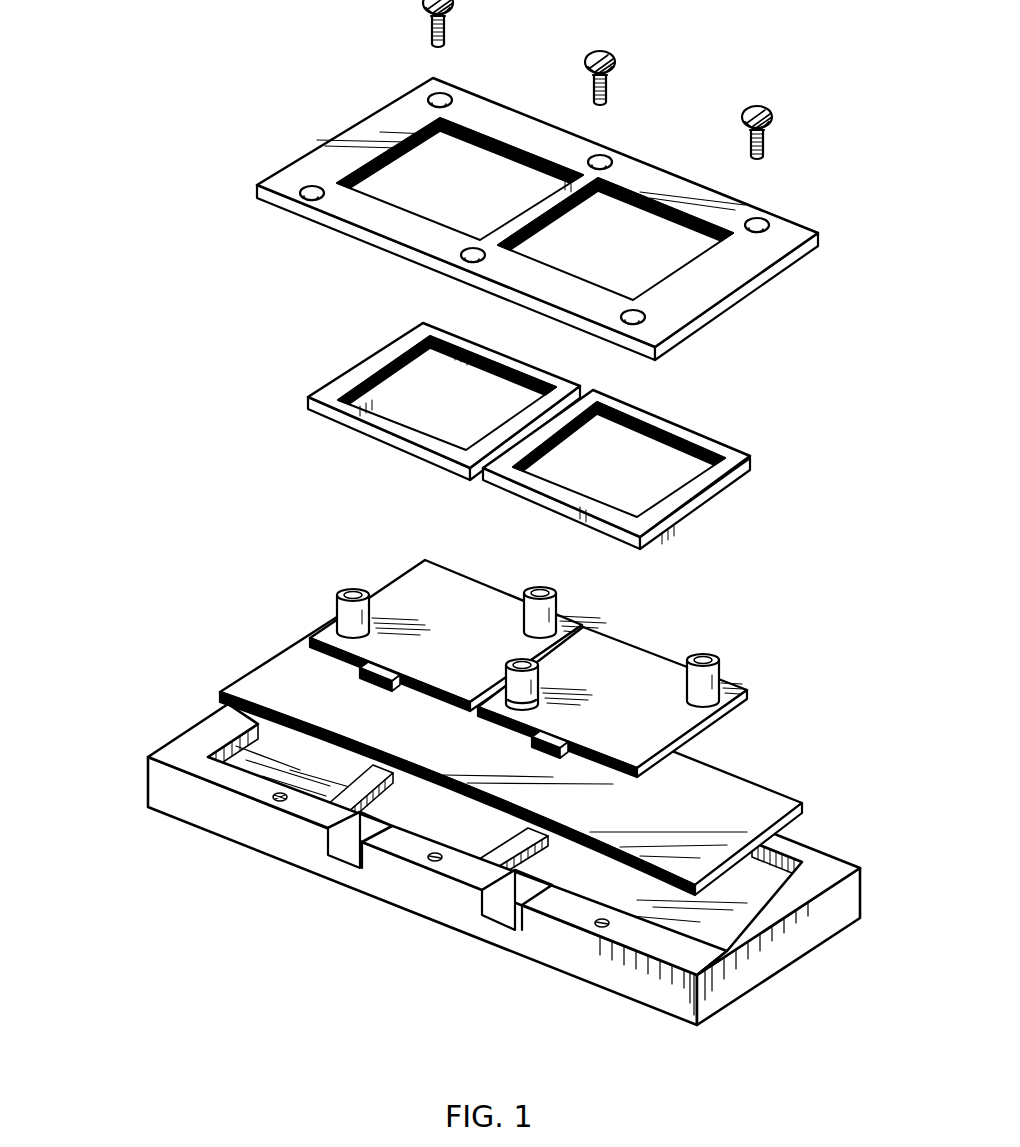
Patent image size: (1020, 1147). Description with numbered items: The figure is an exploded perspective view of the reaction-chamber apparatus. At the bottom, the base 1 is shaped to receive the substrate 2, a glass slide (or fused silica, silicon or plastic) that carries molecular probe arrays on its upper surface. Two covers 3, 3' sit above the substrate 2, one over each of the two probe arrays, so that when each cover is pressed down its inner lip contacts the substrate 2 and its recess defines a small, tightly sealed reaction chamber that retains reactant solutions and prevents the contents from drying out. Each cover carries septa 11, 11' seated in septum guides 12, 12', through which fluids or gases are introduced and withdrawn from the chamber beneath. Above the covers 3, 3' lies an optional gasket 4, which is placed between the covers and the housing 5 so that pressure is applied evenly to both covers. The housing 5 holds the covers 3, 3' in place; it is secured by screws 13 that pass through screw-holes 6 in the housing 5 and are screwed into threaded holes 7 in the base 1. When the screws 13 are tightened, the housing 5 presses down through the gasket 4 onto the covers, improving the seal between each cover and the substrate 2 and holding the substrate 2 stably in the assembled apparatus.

The base 1 is at (168, 790).
The substrate 2 is at (248, 690).
The cover 3 is at (626, 702).
The cover 3' is at (396, 635).
The gasket 4 is at (306, 400).
The housing 5 is at (314, 151).
The screw-holes 6 is at (293, 187).
The threaded holes 7 is at (281, 795).
The septum 11 is at (777, 675).
The septum 11' is at (560, 675).
The septum guide 12 is at (740, 733).
The septum guide 12' is at (561, 715).
The screws 13 is at (768, 110).